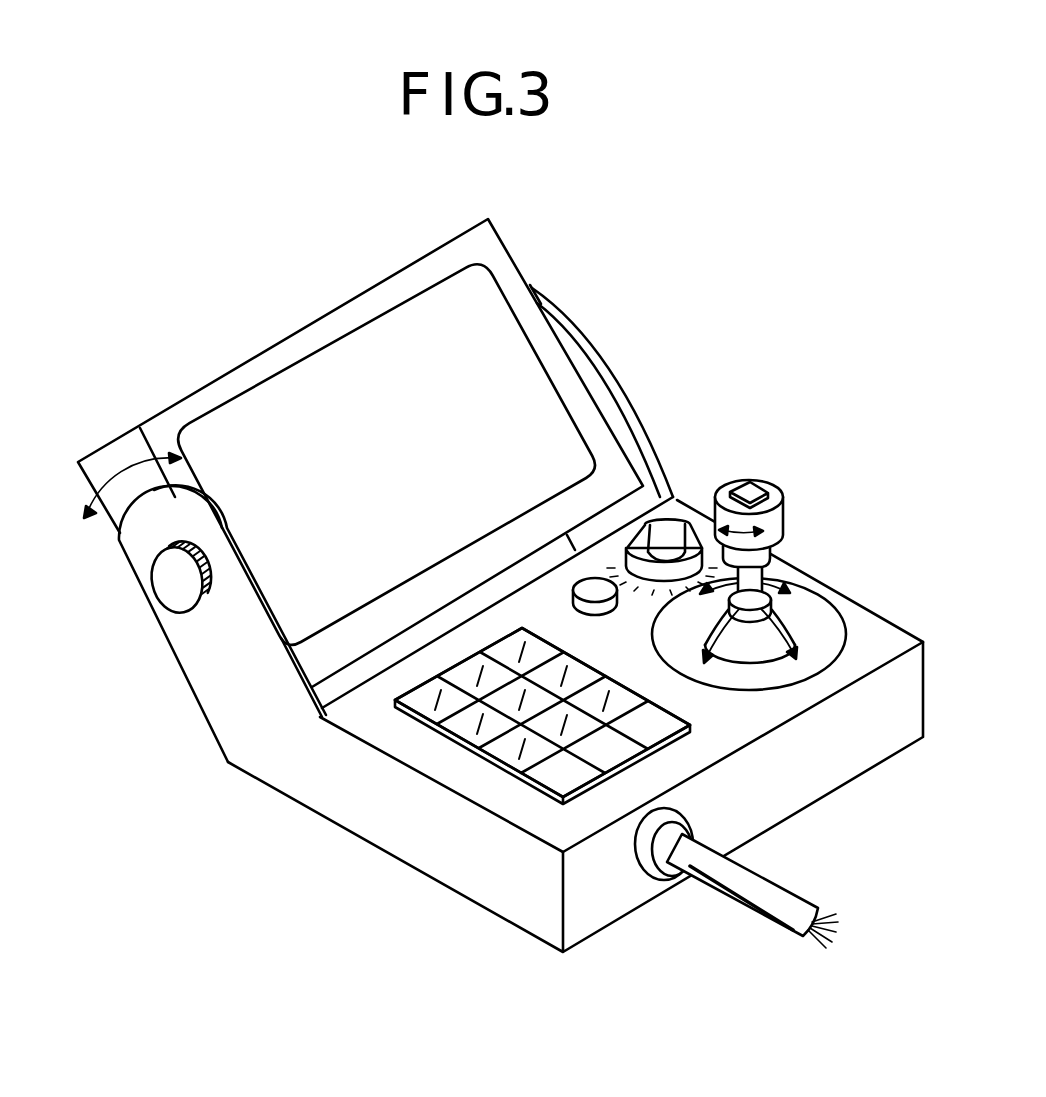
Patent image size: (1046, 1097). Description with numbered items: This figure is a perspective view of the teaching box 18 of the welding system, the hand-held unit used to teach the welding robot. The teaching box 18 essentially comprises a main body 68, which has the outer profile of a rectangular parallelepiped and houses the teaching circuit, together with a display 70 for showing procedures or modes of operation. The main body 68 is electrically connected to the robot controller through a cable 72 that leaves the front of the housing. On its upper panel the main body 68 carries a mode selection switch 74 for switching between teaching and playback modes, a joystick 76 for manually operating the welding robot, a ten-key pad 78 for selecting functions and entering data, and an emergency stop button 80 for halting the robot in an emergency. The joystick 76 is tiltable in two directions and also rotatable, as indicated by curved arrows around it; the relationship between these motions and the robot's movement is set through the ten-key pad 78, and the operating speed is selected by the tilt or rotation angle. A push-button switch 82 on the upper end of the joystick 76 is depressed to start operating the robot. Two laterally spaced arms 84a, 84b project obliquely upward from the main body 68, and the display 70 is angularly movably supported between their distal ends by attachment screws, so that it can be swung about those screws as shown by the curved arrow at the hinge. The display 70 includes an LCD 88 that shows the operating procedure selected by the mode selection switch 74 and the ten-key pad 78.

The teaching box 18 is at (486, 585).
The main body 68 is at (575, 726).
The display 70 is at (375, 468).
The cable 72 is at (736, 878).
The mode selection switch 74 is at (662, 522).
The joystick 76 is at (753, 606).
The ten-key pad 78 is at (542, 729).
The emergency stop button 80 is at (566, 601).
The push-button switch 82 is at (770, 499).
The arm 84a is at (221, 623).
The arm 84b is at (606, 392).
The LCD 88 is at (545, 291).